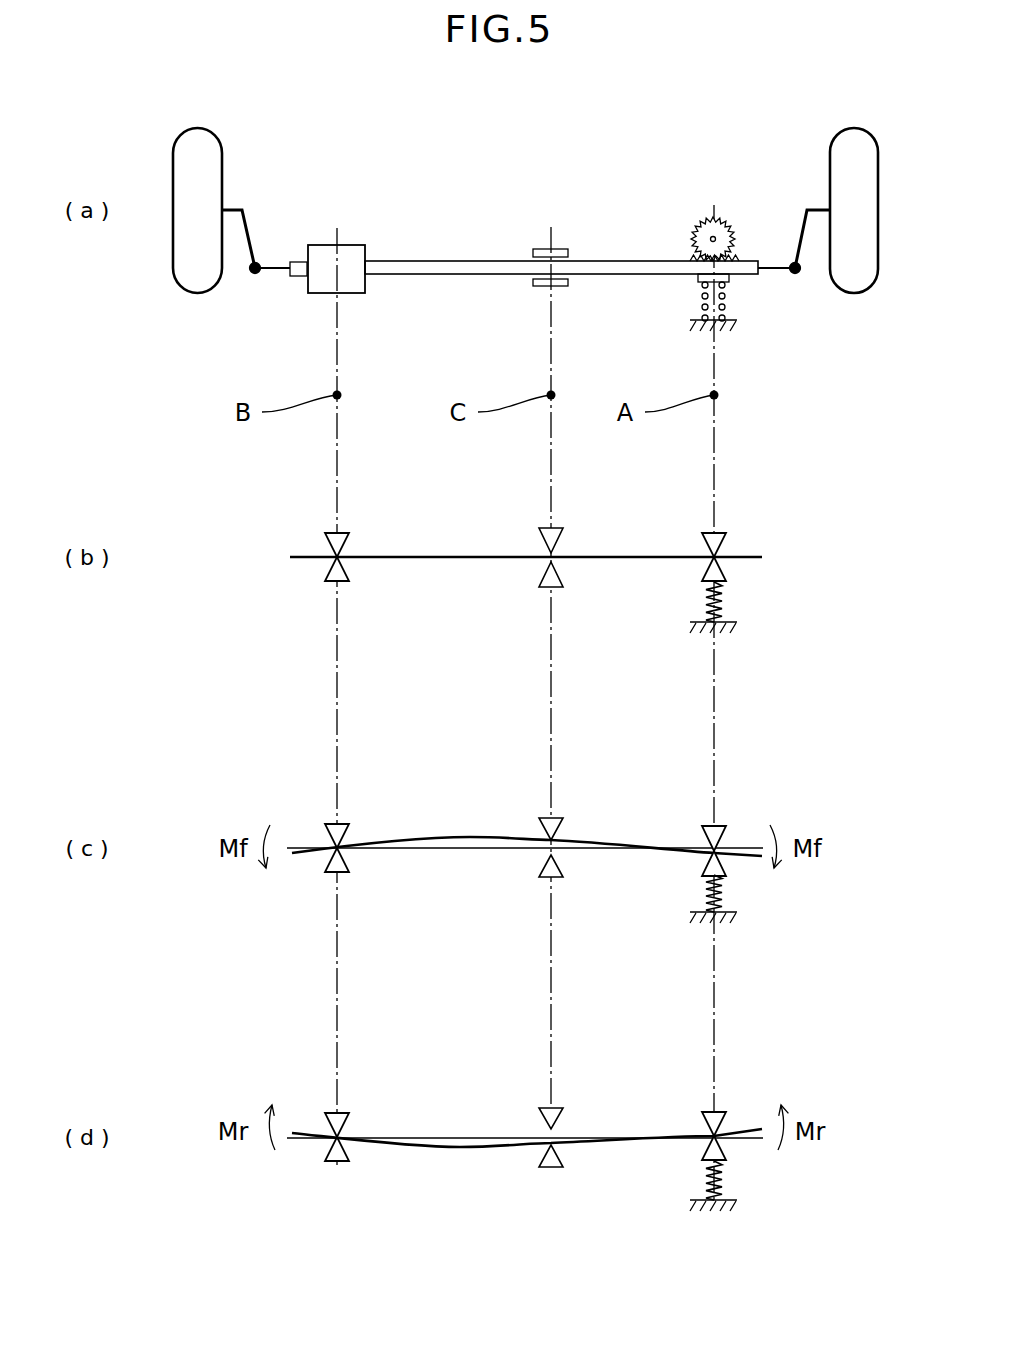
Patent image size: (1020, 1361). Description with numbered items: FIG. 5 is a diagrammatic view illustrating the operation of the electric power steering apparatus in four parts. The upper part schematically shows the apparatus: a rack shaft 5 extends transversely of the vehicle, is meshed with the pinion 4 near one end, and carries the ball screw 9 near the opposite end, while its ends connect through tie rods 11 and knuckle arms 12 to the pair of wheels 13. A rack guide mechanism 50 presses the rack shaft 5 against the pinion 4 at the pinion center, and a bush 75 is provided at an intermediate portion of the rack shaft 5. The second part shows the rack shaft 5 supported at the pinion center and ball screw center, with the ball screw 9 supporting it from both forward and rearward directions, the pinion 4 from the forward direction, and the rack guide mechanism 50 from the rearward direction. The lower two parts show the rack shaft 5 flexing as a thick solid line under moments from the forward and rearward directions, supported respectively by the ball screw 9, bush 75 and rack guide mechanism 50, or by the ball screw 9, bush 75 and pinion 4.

The pinion 4 is at (696, 236).
The rack shaft 5 is at (457, 262).
The ball screw 9 is at (345, 245).
The tie rod 11 is at (278, 272).
The knuckle arm 12 is at (250, 232).
The wheel 13 is at (222, 163).
The rack guide mechanism 50 is at (691, 288).
The bush 75 is at (518, 286).